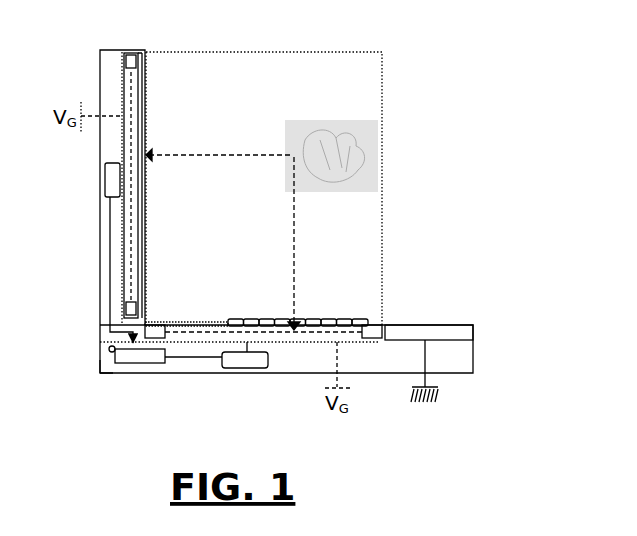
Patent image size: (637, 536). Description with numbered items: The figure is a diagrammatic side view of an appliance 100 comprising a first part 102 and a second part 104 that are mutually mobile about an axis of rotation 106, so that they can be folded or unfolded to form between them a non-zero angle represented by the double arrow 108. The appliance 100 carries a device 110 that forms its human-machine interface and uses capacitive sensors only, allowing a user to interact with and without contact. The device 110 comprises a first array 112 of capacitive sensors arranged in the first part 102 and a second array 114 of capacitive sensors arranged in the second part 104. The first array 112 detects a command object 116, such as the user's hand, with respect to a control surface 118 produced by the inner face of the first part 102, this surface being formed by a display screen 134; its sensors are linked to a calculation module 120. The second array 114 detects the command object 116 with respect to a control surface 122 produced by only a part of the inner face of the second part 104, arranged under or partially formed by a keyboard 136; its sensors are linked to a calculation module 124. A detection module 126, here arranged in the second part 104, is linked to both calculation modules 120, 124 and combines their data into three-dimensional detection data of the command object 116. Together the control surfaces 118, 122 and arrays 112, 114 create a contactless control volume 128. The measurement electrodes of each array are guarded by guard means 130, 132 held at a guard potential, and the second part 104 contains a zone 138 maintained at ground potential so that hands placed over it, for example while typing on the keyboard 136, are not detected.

The appliance 100 is at (513, 105).
The first part 102 is at (97, 43).
The second part 104 is at (477, 377).
The axis of rotation 106 is at (109, 350).
The double arrow 108 is at (151, 297).
The device 110 is at (100, 373).
The first array of capacitive sensors 112 is at (123, 150).
The second array of capacitive sensors 114 is at (288, 338).
The command object 116 is at (298, 134).
The control surface 118 is at (148, 78).
The calculation module 120 is at (105, 181).
The control surface 122 is at (353, 323).
The calculation module 124 is at (243, 368).
The detection module 126 is at (148, 364).
The volume 128 is at (382, 90).
The guard means 130 is at (123, 88).
The guard means 132 is at (363, 342).
The display screen 134 is at (148, 95).
The keyboard 136 is at (313, 319).
The zone 138 is at (433, 333).